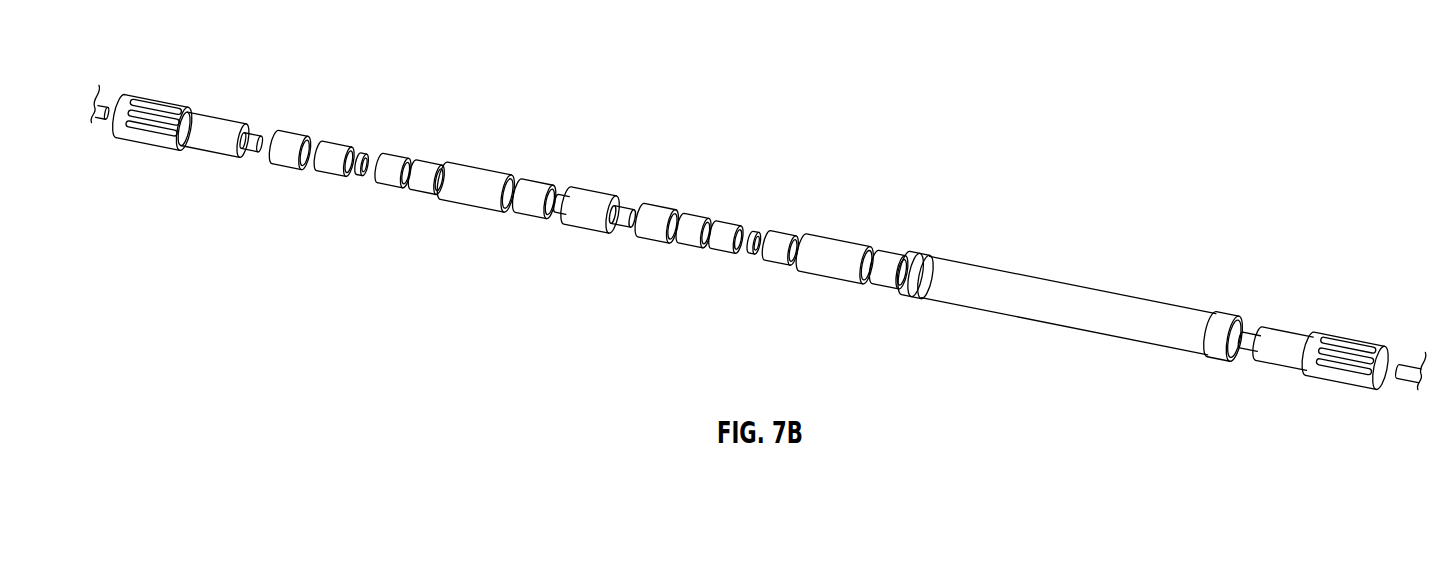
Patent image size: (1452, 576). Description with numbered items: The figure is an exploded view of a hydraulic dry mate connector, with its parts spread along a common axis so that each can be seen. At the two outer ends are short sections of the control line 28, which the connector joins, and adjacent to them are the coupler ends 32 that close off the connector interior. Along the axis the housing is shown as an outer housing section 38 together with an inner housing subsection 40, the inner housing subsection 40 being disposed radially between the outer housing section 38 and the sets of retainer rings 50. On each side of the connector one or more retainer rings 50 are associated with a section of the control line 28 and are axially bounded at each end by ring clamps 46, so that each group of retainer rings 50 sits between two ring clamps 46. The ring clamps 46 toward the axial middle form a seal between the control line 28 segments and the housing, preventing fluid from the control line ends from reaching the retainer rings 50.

The control line 28 is at (95, 125).
The coupler end 32 is at (1289, 302).
The outer housing section 38 is at (1025, 235).
The inner housing subsection 40 is at (831, 204).
The ring clamp 46 is at (517, 232).
The retainer ring 50 is at (427, 139).